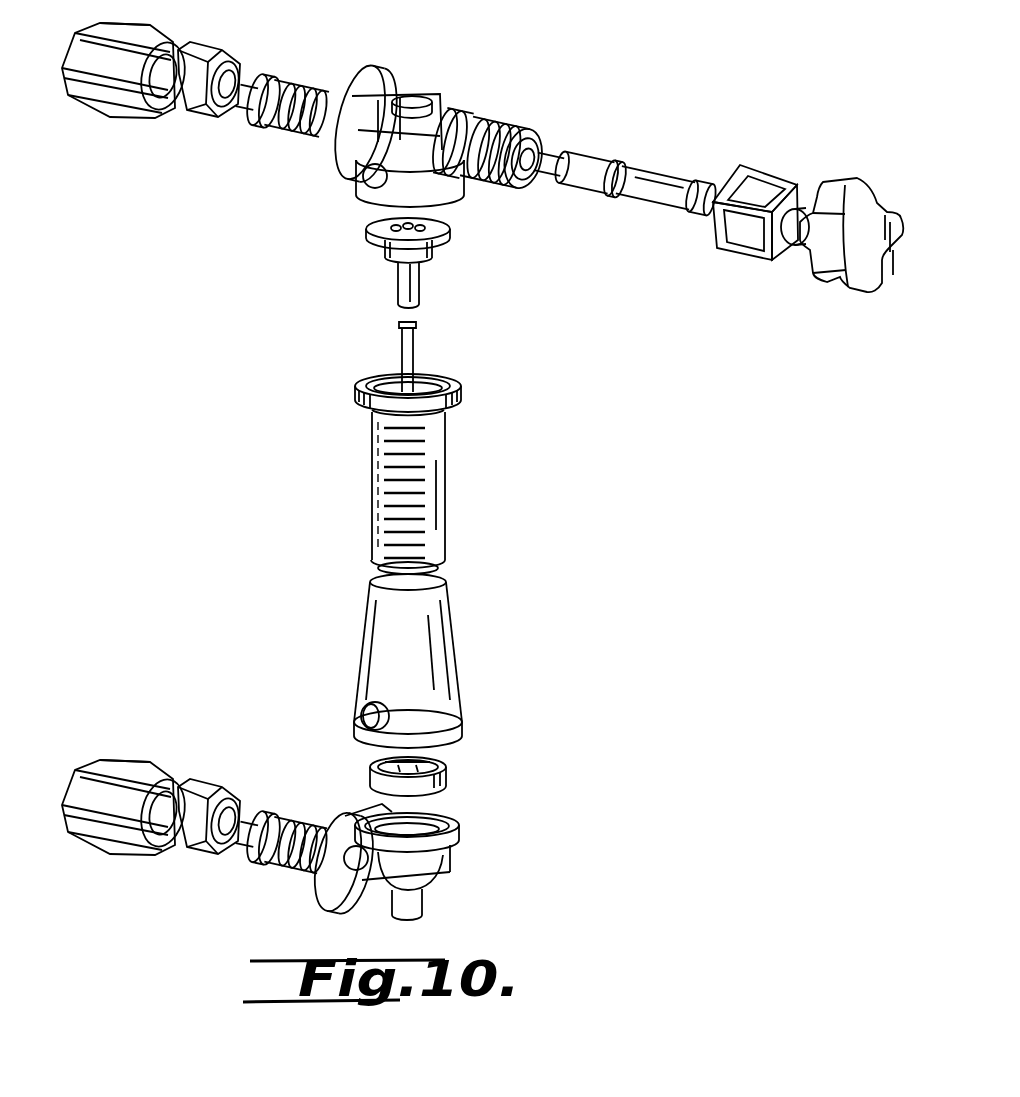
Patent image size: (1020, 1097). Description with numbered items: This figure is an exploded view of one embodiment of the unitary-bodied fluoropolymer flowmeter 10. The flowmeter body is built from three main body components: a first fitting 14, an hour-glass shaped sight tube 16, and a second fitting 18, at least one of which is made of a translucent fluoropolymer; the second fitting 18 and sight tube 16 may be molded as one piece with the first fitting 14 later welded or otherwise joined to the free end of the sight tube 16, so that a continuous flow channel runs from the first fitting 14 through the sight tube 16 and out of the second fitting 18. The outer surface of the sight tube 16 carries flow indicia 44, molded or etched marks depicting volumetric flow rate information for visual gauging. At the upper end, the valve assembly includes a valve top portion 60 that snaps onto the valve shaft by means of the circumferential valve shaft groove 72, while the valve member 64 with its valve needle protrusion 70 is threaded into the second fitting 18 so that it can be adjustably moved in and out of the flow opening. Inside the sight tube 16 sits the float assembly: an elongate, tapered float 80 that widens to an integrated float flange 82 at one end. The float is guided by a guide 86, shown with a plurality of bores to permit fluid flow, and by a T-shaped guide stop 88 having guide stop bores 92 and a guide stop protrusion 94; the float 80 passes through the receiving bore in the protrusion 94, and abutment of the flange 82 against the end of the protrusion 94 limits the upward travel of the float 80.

The flowmeter 10 is at (603, 112).
The first fitting 14 is at (295, 816).
The sight tube 16 is at (442, 466).
The second fitting 18 is at (478, 118).
The flow indicia 44 is at (372, 443).
The valve top portion 60 is at (848, 178).
The valve member 64 is at (656, 174).
The valve needle protrusion 70 is at (513, 178).
The valve shaft groove 72 is at (740, 241).
The elongate float 80 is at (421, 336).
The float flange 82 is at (398, 322).
The guide 86 is at (447, 777).
The guide stop 88 is at (453, 230).
The guide stop bores 92 is at (395, 222).
The guide stop protrusion 94 is at (422, 282).